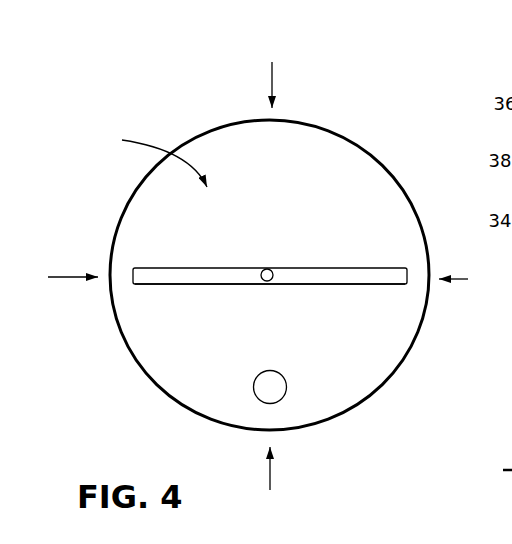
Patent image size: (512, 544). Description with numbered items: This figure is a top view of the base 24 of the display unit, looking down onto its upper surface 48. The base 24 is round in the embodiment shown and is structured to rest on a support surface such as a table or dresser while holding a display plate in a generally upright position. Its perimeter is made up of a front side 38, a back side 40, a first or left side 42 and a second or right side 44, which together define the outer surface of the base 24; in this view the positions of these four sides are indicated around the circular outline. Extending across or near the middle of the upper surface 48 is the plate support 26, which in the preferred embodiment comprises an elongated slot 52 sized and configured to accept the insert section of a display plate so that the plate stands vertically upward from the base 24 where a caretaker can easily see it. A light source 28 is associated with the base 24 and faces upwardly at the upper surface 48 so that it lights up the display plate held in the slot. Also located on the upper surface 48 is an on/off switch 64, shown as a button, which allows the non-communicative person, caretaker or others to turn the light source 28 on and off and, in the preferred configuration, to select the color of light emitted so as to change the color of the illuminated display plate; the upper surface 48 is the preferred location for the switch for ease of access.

The base 24 is at (135, 357).
The plate support 26 is at (178, 262).
The light source 28 is at (272, 287).
The front side 38 is at (271, 481).
The back side 40 is at (272, 71).
The first or left side 42 is at (59, 278).
The second or right side 44 is at (469, 281).
The upper surface 48 is at (150, 158).
The elongated slot 52 is at (323, 277).
The on/off switch 64 is at (270, 386).